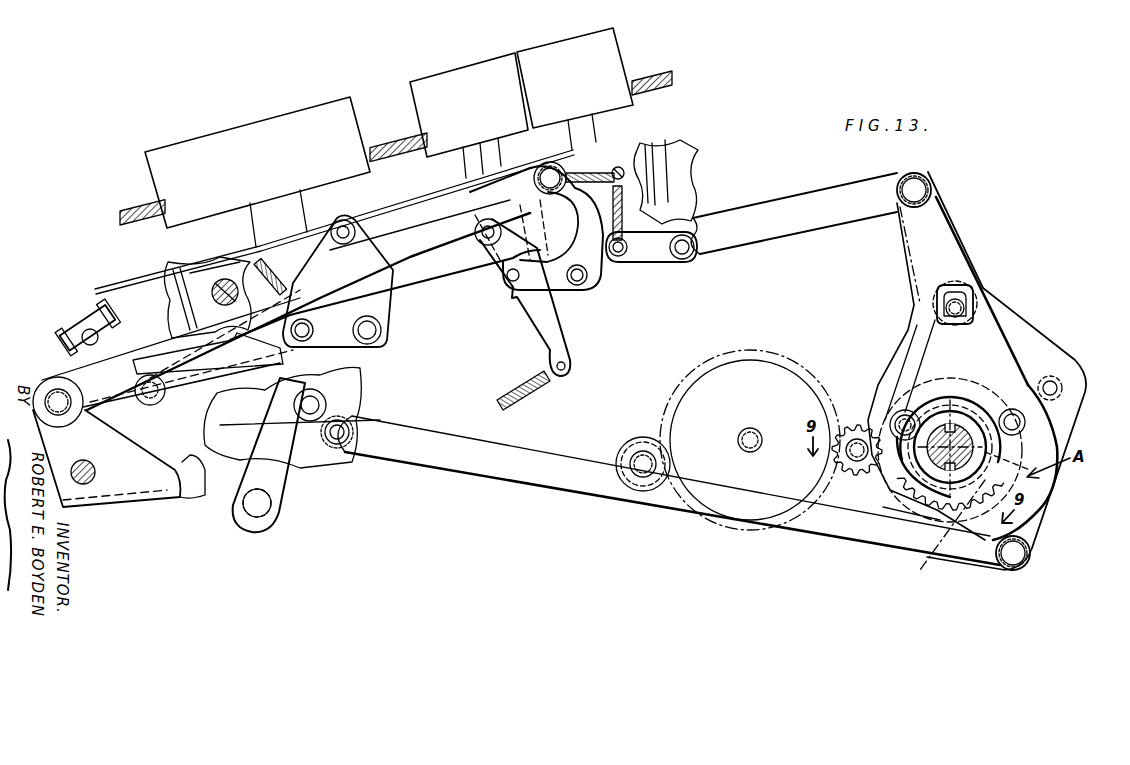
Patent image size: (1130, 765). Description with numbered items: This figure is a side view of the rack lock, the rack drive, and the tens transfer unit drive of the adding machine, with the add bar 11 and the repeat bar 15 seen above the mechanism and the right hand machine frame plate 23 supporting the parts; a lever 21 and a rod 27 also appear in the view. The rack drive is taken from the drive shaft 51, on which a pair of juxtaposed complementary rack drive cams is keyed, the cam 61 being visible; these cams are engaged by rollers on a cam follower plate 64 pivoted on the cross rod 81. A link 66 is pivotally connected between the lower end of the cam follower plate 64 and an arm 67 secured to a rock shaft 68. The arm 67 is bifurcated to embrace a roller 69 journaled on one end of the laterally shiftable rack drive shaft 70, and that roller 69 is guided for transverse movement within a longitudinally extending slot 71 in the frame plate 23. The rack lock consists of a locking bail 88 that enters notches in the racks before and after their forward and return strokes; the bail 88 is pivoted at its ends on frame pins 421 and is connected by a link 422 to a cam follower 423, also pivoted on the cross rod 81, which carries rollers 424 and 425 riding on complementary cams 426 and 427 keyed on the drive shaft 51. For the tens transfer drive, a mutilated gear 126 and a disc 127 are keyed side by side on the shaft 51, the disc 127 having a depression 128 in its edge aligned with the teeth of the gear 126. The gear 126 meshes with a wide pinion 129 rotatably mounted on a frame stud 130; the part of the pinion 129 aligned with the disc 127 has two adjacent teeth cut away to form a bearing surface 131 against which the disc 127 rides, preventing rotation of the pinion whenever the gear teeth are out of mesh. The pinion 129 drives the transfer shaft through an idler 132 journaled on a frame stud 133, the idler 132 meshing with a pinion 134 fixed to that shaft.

The add bar 11 is at (257, 172).
The repeat bar 15 is at (469, 115).
The lever 21 is at (437, 278).
The machine frame plate 23 is at (222, 245).
The rod 27 is at (104, 294).
The drive shaft 51 is at (950, 447).
The rack drive cam 61 is at (1040, 484).
The cam follower plate 64 is at (1083, 392).
The link 66 is at (602, 502).
The arm 67 is at (305, 483).
The rock shaft 68 is at (244, 526).
The roller 69 is at (312, 402).
The rack drive shaft 70 is at (352, 408).
The slot 71 is at (226, 427).
The cross rod 81 is at (976, 300).
The locking bail 88 is at (188, 485).
The mutilated gear 126 is at (894, 506).
The disc 127 is at (1037, 508).
The depression 128 is at (927, 555).
The wide pinion 129 is at (644, 442).
The frame stud 130 is at (853, 474).
The bearing surface 131 is at (883, 394).
The idler 132 is at (778, 370).
The frame stud 133 is at (752, 434).
The pinion 134 is at (618, 448).
The frame pins 421 is at (96, 474).
The link 422 is at (76, 375).
The cam follower 423 is at (938, 226).
The roller 424 is at (914, 400).
The roller 425 is at (1048, 378).
The cam 426 is at (960, 382).
The cam 427 is at (1012, 436).